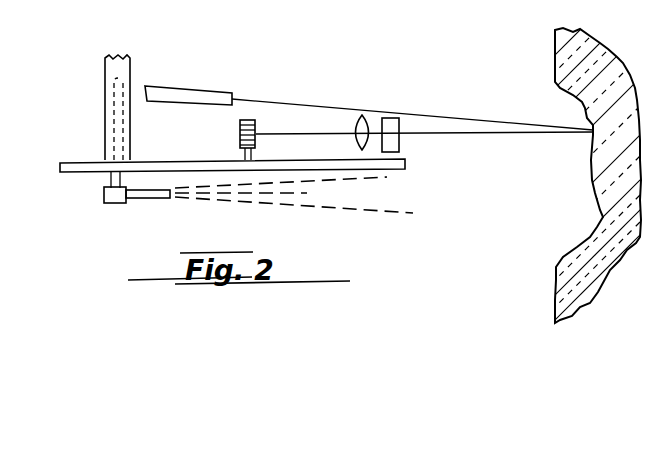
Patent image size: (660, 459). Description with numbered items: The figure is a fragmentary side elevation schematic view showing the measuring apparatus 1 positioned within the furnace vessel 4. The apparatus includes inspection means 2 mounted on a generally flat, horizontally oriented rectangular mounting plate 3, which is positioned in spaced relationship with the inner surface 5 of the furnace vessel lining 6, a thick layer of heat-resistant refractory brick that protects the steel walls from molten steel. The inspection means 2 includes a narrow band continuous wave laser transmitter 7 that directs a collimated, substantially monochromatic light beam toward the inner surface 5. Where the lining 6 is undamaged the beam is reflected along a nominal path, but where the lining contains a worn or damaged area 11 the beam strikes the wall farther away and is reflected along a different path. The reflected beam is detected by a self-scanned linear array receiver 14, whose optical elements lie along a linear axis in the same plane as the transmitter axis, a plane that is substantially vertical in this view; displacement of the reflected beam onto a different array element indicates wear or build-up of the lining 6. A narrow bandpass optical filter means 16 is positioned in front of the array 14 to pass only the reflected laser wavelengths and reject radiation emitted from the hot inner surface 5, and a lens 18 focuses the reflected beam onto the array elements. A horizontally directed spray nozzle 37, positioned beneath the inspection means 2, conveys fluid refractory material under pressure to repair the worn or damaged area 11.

The measuring apparatus 1 is at (150, 65).
The inspection means 2 is at (310, 139).
The mounting plate 3 is at (70, 172).
The furnace vessel 4 is at (301, 72).
The inner surface 5 is at (557, 58).
The furnace vessel lining 6 is at (584, 108).
The laser transmitter 7 is at (173, 92).
The worn or damaged area 11 is at (593, 192).
The self-scanned linear array receiver 14 is at (240, 143).
The narrow bandpass optical filter means 16 is at (398, 147).
The lens 18 is at (367, 117).
The spray nozzle 37 is at (150, 198).